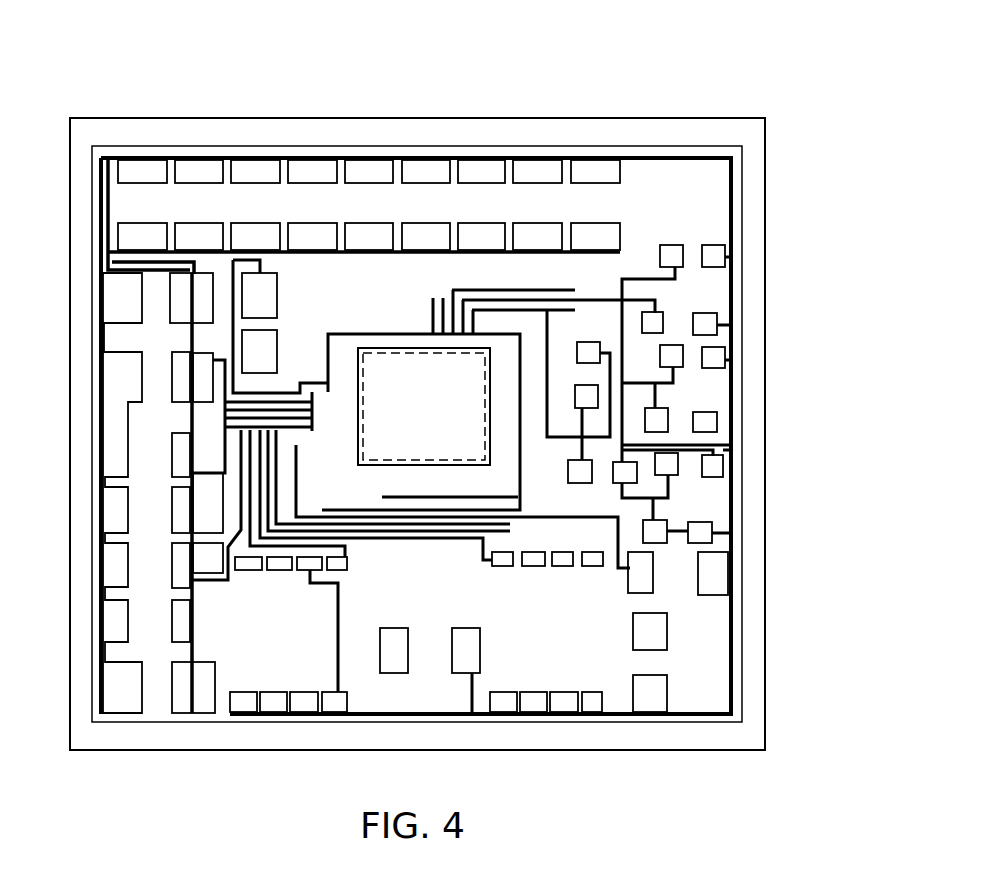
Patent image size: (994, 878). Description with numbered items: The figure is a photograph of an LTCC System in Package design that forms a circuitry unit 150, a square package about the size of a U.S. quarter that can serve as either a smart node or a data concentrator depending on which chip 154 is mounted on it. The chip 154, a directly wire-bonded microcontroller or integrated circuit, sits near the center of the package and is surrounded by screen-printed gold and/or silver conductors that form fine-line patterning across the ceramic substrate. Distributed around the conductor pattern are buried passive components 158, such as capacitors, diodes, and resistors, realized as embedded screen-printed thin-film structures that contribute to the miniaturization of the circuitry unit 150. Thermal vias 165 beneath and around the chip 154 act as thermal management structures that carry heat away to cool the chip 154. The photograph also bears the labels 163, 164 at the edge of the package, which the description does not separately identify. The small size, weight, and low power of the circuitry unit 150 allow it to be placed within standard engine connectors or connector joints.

The circuitry unit 150 is at (733, 98).
The chip 154 is at (383, 352).
The buried passive components 158 is at (407, 678).
The board outer edge layer 163 is at (452, 118).
The board inner edge layer 164 is at (417, 394).
The thermal vias 165 is at (413, 450).